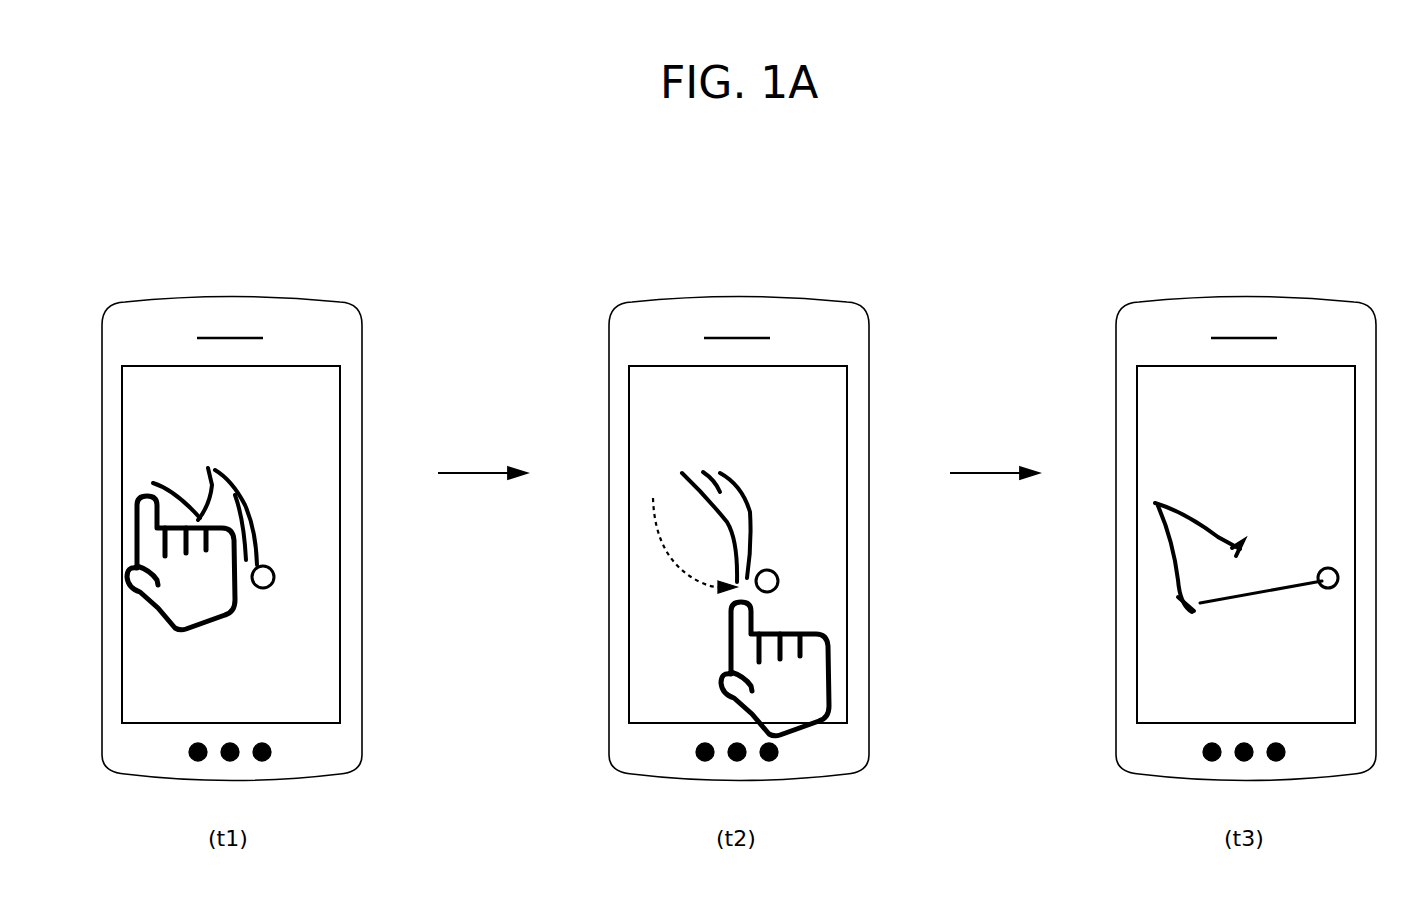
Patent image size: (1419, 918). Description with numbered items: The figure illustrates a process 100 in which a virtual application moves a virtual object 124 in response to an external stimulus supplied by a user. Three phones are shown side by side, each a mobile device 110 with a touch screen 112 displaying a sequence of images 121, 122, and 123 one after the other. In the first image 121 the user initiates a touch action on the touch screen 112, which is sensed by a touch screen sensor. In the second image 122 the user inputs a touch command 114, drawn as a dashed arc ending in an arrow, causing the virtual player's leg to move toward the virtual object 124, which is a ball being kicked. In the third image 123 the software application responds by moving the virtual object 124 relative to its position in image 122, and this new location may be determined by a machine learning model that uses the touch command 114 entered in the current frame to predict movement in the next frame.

The process 100 is at (137, 102).
The mobile device 110 is at (308, 301).
The touch screen 112 is at (196, 365).
The touch command 114 is at (671, 553).
The image 121 is at (336, 396).
The image 122 is at (840, 396).
The image 123 is at (1350, 396).
The virtual object 124 is at (267, 586).